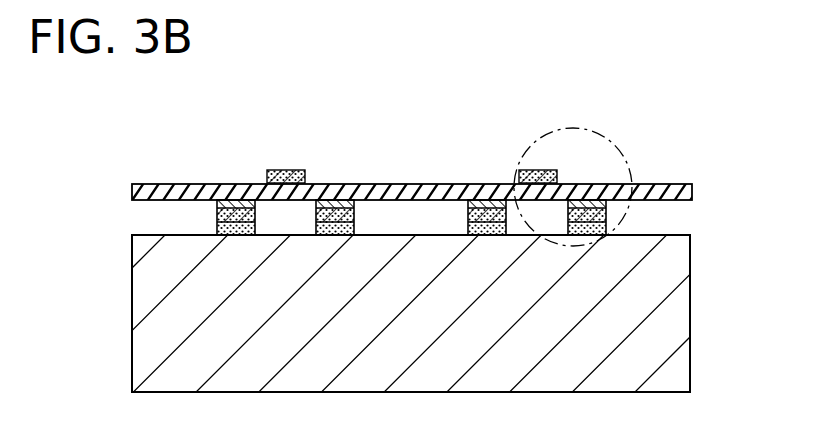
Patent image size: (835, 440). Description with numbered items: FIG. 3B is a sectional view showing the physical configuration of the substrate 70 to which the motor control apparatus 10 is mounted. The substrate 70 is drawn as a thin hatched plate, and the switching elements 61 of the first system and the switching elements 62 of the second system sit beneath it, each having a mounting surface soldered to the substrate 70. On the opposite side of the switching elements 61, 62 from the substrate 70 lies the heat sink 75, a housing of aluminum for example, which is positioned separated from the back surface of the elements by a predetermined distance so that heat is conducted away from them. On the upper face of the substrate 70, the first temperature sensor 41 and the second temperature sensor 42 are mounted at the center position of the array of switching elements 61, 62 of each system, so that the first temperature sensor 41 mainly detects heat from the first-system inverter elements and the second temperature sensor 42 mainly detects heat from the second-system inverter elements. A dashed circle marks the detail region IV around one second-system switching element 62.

The motor control apparatus 10 is at (413, 130).
The first temperature sensor 41 is at (283, 169).
The second temperature sensor 42 is at (543, 169).
The switching elements of the first system 61 is at (217, 210).
The switching elements of the second system 62 is at (605, 209).
The substrate 70 is at (680, 190).
The heat sink 75 is at (675, 335).
The region IV is at (623, 154).